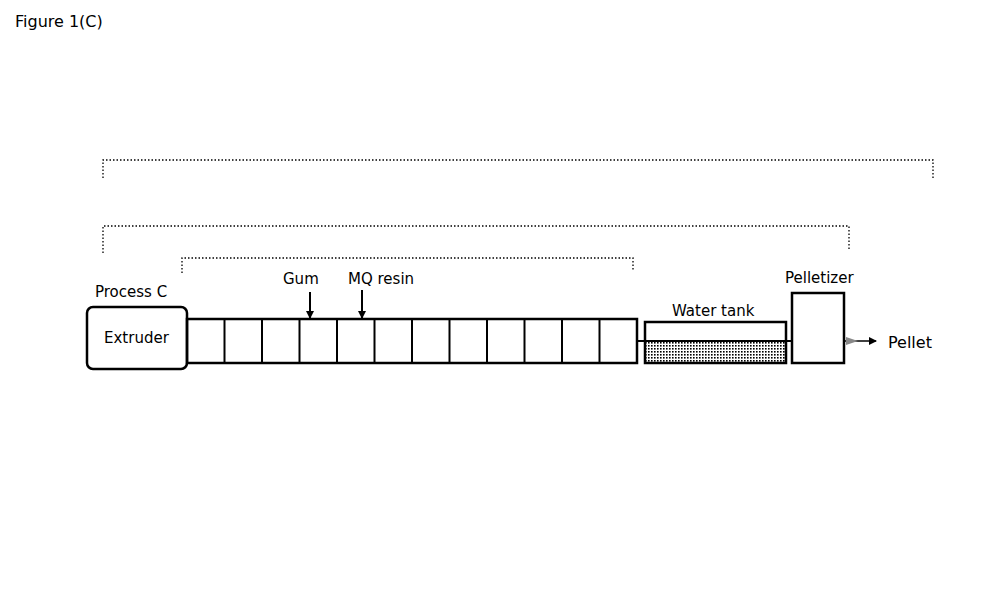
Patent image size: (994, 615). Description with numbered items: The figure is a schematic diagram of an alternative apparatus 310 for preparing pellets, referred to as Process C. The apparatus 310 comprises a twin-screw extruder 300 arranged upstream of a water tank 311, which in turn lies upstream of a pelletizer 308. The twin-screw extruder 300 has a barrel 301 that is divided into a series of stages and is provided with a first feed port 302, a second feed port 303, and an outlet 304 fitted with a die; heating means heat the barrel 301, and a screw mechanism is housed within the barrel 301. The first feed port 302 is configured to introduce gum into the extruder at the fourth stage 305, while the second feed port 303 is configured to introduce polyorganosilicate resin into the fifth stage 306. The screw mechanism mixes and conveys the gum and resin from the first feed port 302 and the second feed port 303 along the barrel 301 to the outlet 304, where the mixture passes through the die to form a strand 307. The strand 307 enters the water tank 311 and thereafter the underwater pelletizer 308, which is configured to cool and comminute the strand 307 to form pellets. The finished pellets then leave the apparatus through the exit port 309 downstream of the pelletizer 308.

The twin-screw extruder 300 is at (406, 257).
The barrel 301 is at (474, 226).
The first feed port 302 is at (308, 328).
The second feed port 303 is at (358, 328).
The outlet 304 is at (630, 337).
The fourth stage 305 is at (306, 356).
The fifth stage 306 is at (367, 356).
The strand 307 is at (638, 352).
The pelletizer 308 is at (812, 354).
The exit port 309 is at (856, 340).
The apparatus 310 is at (519, 160).
The water tank 311 is at (703, 365).